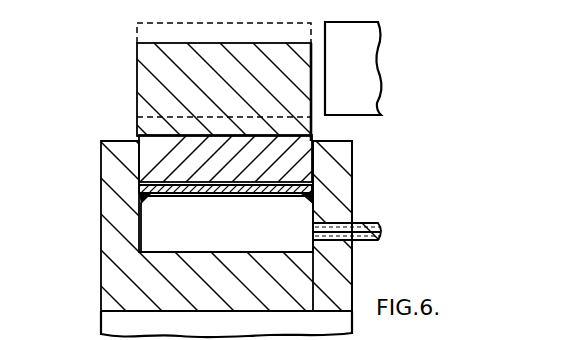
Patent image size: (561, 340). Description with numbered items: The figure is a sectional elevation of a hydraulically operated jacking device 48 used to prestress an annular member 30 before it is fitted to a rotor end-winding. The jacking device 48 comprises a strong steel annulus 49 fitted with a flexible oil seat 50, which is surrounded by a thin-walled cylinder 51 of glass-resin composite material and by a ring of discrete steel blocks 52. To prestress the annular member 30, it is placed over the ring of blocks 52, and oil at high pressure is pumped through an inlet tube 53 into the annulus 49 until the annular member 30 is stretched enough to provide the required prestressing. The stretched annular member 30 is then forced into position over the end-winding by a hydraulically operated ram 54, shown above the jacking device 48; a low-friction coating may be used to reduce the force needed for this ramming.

The annular member 30 is at (145, 74).
The hydraulically operated jacking device 48 is at (353, 182).
The strong steel annulus 49 is at (335, 273).
The flexible oil seat 50 is at (139, 200).
The thin-walled cylinder 51 is at (147, 186).
The ring of discrete steel blocks 52 is at (157, 147).
The inlet tube 53 is at (381, 221).
The hydraulically operated ram 54 is at (370, 73).